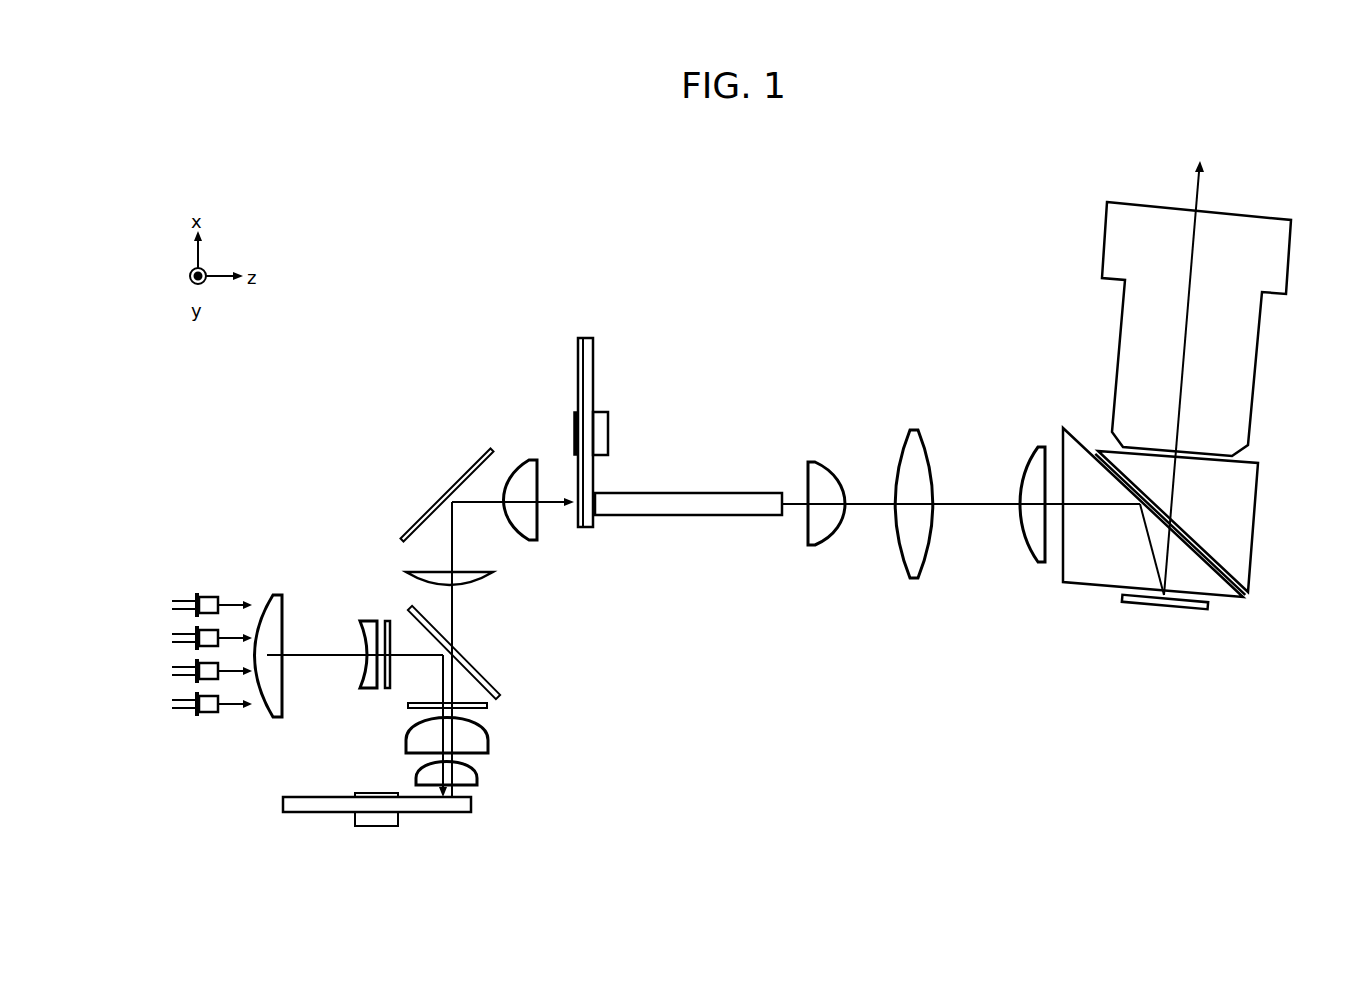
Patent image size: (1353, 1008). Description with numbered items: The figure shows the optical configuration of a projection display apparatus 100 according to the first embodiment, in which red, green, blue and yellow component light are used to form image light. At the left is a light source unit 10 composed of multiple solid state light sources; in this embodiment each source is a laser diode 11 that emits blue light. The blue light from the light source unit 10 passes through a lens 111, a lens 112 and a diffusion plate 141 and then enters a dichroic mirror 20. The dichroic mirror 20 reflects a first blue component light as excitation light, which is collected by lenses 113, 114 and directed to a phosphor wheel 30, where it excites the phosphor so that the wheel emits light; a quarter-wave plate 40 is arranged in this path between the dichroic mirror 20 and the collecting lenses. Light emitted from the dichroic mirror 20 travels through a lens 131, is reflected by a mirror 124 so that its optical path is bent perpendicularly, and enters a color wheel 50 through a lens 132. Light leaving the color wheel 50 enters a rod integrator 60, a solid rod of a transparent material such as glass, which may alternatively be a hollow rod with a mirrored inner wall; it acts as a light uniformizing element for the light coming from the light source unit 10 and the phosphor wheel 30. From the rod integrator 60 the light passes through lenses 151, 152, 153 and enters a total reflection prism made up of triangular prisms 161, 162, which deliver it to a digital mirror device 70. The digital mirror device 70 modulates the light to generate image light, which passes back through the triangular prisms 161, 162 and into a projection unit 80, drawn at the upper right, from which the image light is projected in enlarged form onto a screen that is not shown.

The projection display apparatus 100 is at (759, 236).
The light source unit 10 is at (184, 693).
The laser diode 11 is at (210, 710).
The lens 111 is at (277, 598).
The lens 112 is at (368, 622).
The diffusion plate 141 is at (387, 622).
The dichroic mirror 20 is at (408, 610).
The mirror 124 is at (420, 515).
The lens 131 is at (480, 577).
The lens 132 is at (530, 463).
The quarter-wave plate 40 is at (487, 706).
The lens 113 is at (430, 735).
The lens 114 is at (430, 778).
The phosphor wheel 30 is at (297, 815).
The color wheel 50 is at (587, 338).
The rod integrator 60 is at (647, 503).
The lens 151 is at (808, 460).
The lens 152 is at (910, 453).
The lens 153 is at (1037, 455).
The triangular prism 161 is at (1090, 567).
The triangular prism 162 is at (1238, 508).
The digital mirror device 70 is at (1183, 606).
The projection unit 80 is at (1117, 250).